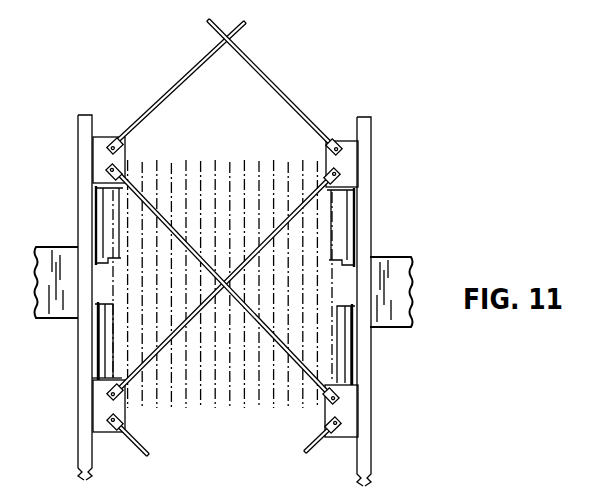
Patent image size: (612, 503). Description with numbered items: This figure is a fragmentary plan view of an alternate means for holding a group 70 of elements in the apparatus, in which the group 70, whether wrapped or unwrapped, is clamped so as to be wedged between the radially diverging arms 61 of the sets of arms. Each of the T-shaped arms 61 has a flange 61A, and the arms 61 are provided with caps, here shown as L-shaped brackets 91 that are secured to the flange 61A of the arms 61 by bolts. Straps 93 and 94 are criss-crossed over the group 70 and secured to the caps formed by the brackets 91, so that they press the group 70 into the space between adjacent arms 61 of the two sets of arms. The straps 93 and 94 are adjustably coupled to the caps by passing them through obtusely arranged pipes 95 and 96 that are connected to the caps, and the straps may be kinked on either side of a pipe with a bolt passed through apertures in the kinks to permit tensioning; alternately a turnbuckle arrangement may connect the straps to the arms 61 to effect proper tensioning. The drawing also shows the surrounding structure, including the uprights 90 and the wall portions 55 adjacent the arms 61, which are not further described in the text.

The upright post 90 is at (78, 119).
The L-shaped bracket 91 is at (108, 140).
The wall 55 is at (50, 262).
The arm 61 is at (108, 339).
The flange 61A is at (92, 358).
The group 70 is at (207, 156).
The strap 93 is at (312, 192).
The strap 94 is at (147, 123).
The pipe 95 is at (325, 420).
The pipe 96 is at (340, 393).